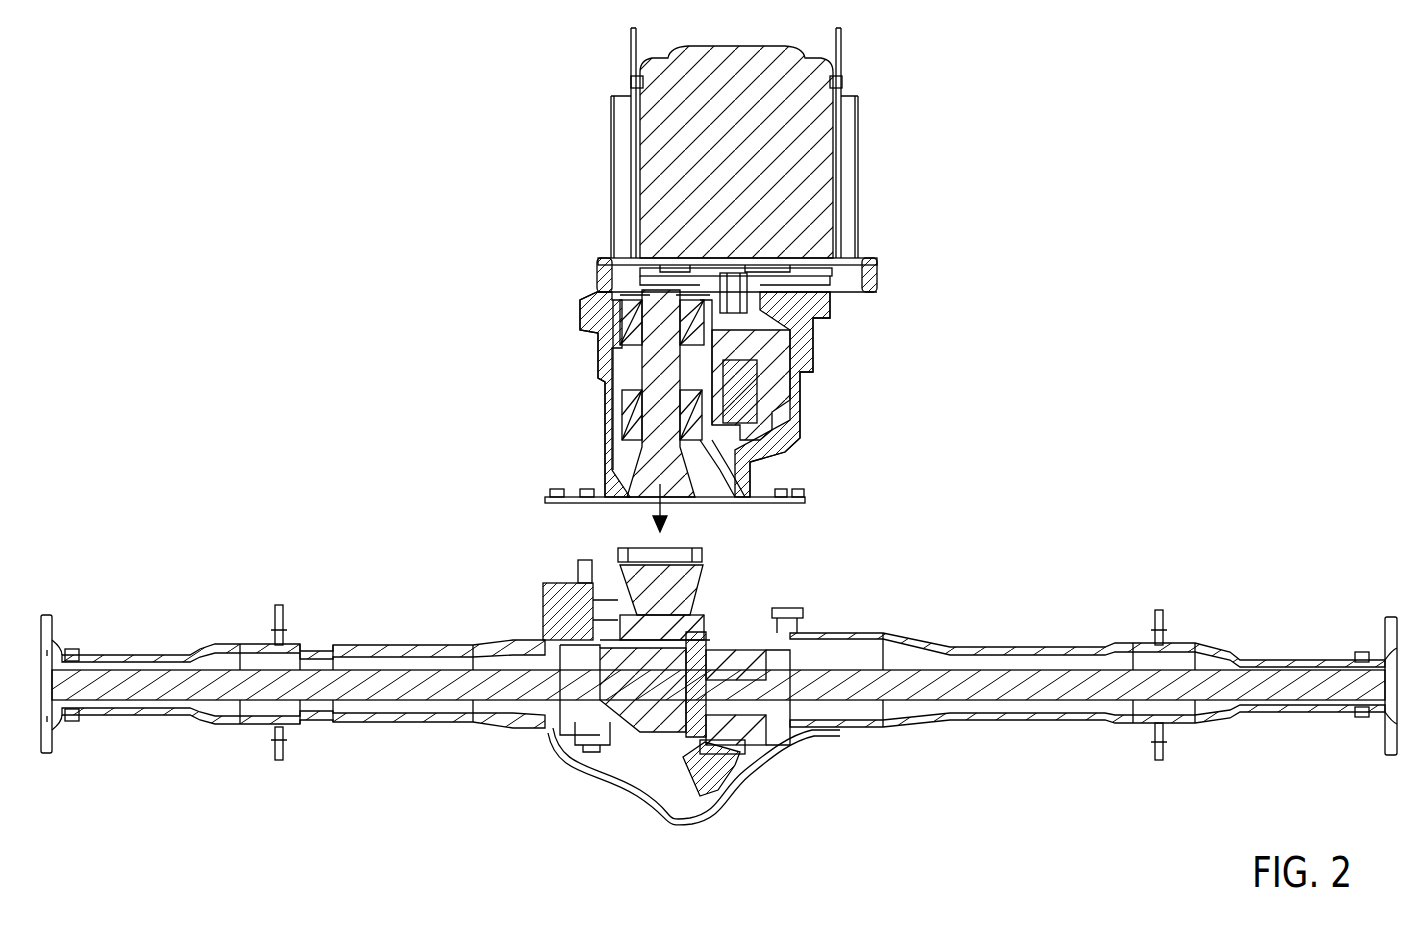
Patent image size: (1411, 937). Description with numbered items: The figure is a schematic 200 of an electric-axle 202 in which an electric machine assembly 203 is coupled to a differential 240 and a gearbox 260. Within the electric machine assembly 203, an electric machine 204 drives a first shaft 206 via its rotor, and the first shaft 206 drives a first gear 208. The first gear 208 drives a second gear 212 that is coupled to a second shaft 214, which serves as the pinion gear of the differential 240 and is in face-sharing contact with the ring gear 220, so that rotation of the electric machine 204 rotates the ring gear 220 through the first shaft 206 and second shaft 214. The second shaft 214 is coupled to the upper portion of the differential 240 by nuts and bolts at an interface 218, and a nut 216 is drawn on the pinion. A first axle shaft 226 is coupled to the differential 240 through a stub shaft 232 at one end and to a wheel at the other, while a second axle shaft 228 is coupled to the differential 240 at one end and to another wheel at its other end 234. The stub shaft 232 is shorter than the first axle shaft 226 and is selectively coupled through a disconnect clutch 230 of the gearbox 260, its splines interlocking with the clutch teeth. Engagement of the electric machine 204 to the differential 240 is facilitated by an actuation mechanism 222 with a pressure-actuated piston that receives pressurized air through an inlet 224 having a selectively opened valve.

The schematic 200 is at (1195, 72).
The electric-axle 202 is at (1115, 182).
The electric machine assembly 203 is at (896, 247).
The electric machine 204 is at (830, 182).
The first shaft 206 is at (737, 340).
The first gear 208 is at (747, 383).
The second gear 212 is at (625, 375).
The second shaft 214 is at (643, 418).
The nut 216 is at (675, 543).
The interface 218 is at (703, 553).
The ring gear 220 is at (737, 500).
The actuation mechanism 222 is at (527, 592).
The inlet 224 is at (637, 630).
The first axle shaft 226 is at (435, 692).
The second axle shaft 228 is at (888, 690).
The disconnect clutch 230 is at (585, 723).
The stub shaft 232 is at (52, 662).
The other end 234 is at (1385, 640).
The differential 240 is at (757, 792).
The gearbox 260 is at (793, 572).